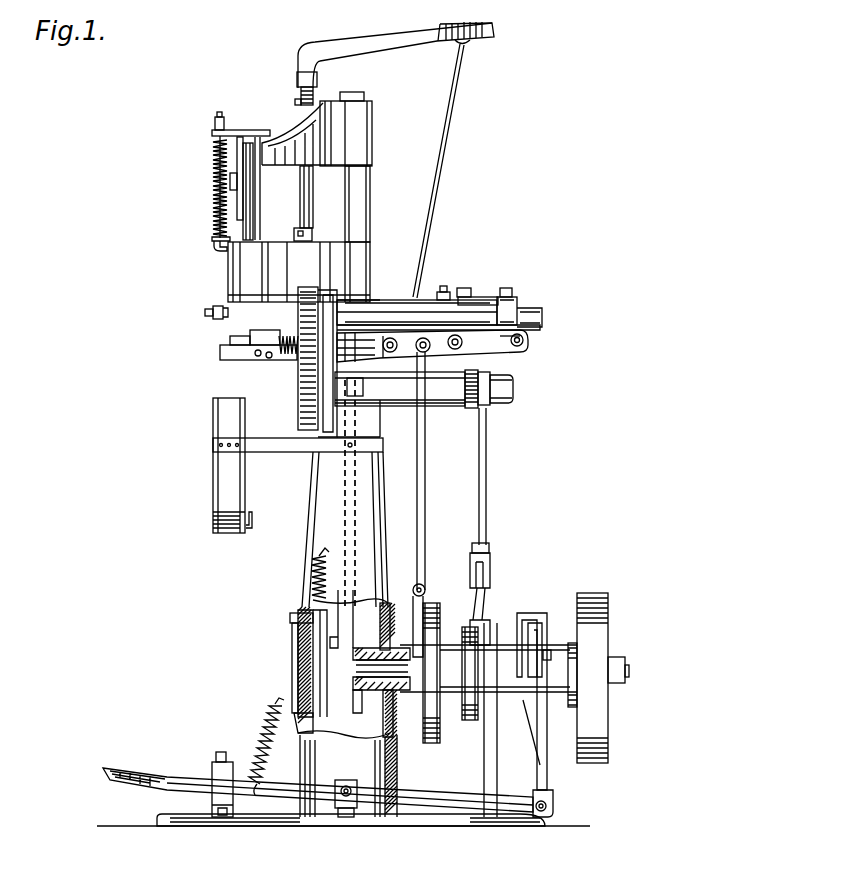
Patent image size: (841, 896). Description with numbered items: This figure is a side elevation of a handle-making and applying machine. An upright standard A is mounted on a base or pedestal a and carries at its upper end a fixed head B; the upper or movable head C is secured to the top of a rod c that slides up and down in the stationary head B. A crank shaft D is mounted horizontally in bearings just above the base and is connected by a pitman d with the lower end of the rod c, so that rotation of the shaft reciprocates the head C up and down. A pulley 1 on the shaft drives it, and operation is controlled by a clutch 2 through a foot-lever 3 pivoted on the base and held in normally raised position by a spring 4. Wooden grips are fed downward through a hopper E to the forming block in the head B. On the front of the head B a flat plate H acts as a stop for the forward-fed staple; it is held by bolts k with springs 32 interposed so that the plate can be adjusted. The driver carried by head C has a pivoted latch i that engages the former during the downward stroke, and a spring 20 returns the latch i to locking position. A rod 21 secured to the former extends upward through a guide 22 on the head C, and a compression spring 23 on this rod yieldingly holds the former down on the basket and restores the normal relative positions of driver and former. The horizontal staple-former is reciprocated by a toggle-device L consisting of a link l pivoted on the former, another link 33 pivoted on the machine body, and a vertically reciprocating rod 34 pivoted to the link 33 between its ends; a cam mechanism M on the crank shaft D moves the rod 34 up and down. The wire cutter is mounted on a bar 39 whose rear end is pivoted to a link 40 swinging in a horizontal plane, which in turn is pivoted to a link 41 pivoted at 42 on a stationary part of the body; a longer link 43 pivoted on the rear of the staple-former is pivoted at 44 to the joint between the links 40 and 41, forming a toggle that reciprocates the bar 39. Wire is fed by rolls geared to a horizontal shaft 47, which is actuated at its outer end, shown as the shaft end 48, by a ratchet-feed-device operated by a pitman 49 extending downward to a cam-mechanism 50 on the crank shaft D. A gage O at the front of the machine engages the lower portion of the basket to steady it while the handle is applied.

The pulley 1 is at (592, 613).
The clutch 2 is at (570, 687).
The foot-lever 3 is at (290, 792).
The spring 4 is at (311, 589).
The spring 20 is at (254, 222).
The rod 21 is at (212, 241).
The guide 22 is at (232, 134).
The compression spring 23 is at (212, 183).
The springs 32 is at (222, 306).
The link 33 is at (434, 302).
The vertically reciprocating rod 34 is at (423, 478).
The bar 39 is at (444, 294).
The link 40 is at (455, 300).
The link 41 is at (478, 300).
The pivot 42 is at (513, 296).
The longer link 43 is at (500, 302).
The pivot 44 is at (466, 290).
The horizontal shaft 47 is at (397, 396).
The shaft end collar 48 is at (483, 405).
The pitman 49 is at (484, 482).
The cam-mechanism 50 is at (478, 640).
The upright standard A is at (321, 537).
The fixed head B is at (268, 265).
The movable head C is at (333, 143).
The crank shaft D is at (397, 700).
The hopper E is at (298, 181).
The flat plate H is at (225, 318).
The toggle-device L is at (465, 352).
The cam mechanism M is at (420, 612).
The gage O is at (228, 490).
The base or pedestal a is at (450, 826).
The rod c is at (355, 195).
The pitman d is at (357, 550).
The pivoted latch i is at (245, 203).
The bolts k is at (205, 314).
The link l is at (510, 342).